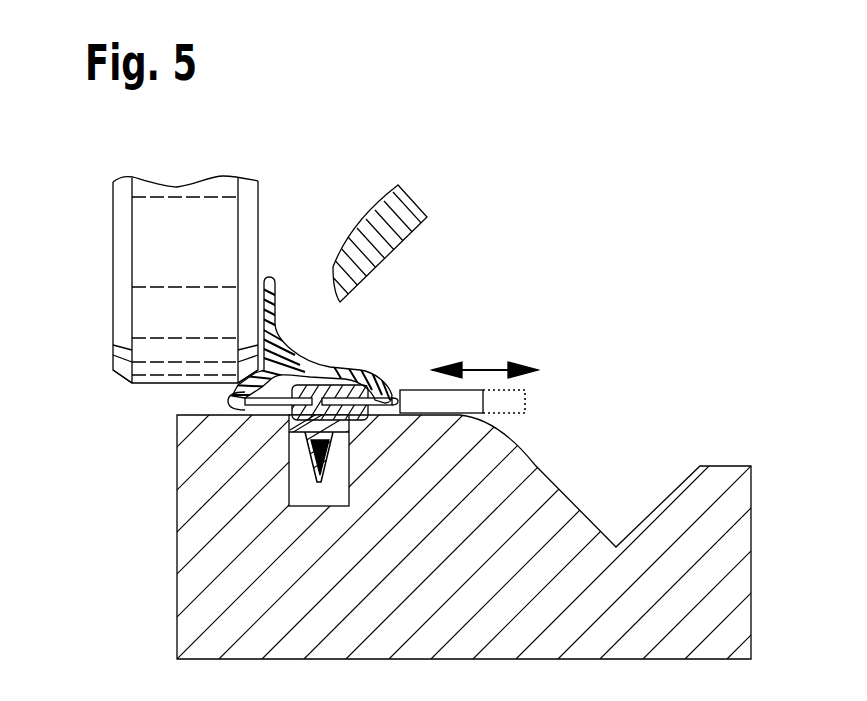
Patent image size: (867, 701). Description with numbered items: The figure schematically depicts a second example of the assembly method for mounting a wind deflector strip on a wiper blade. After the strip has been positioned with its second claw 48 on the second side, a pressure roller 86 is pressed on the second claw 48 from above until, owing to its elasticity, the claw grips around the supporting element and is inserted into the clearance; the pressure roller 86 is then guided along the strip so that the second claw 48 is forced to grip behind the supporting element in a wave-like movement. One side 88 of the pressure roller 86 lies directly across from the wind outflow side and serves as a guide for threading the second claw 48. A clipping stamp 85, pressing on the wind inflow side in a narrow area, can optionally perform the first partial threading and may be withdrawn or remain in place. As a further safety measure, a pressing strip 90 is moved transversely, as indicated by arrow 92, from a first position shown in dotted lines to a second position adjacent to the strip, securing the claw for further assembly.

The second claw 48 is at (237, 395).
The clipping stamp 85 is at (400, 213).
The pressure roller 86 is at (137, 247).
The side of the pressure roller 88 is at (257, 237).
The pressing strip 90 is at (415, 403).
The arrow 92 is at (488, 366).